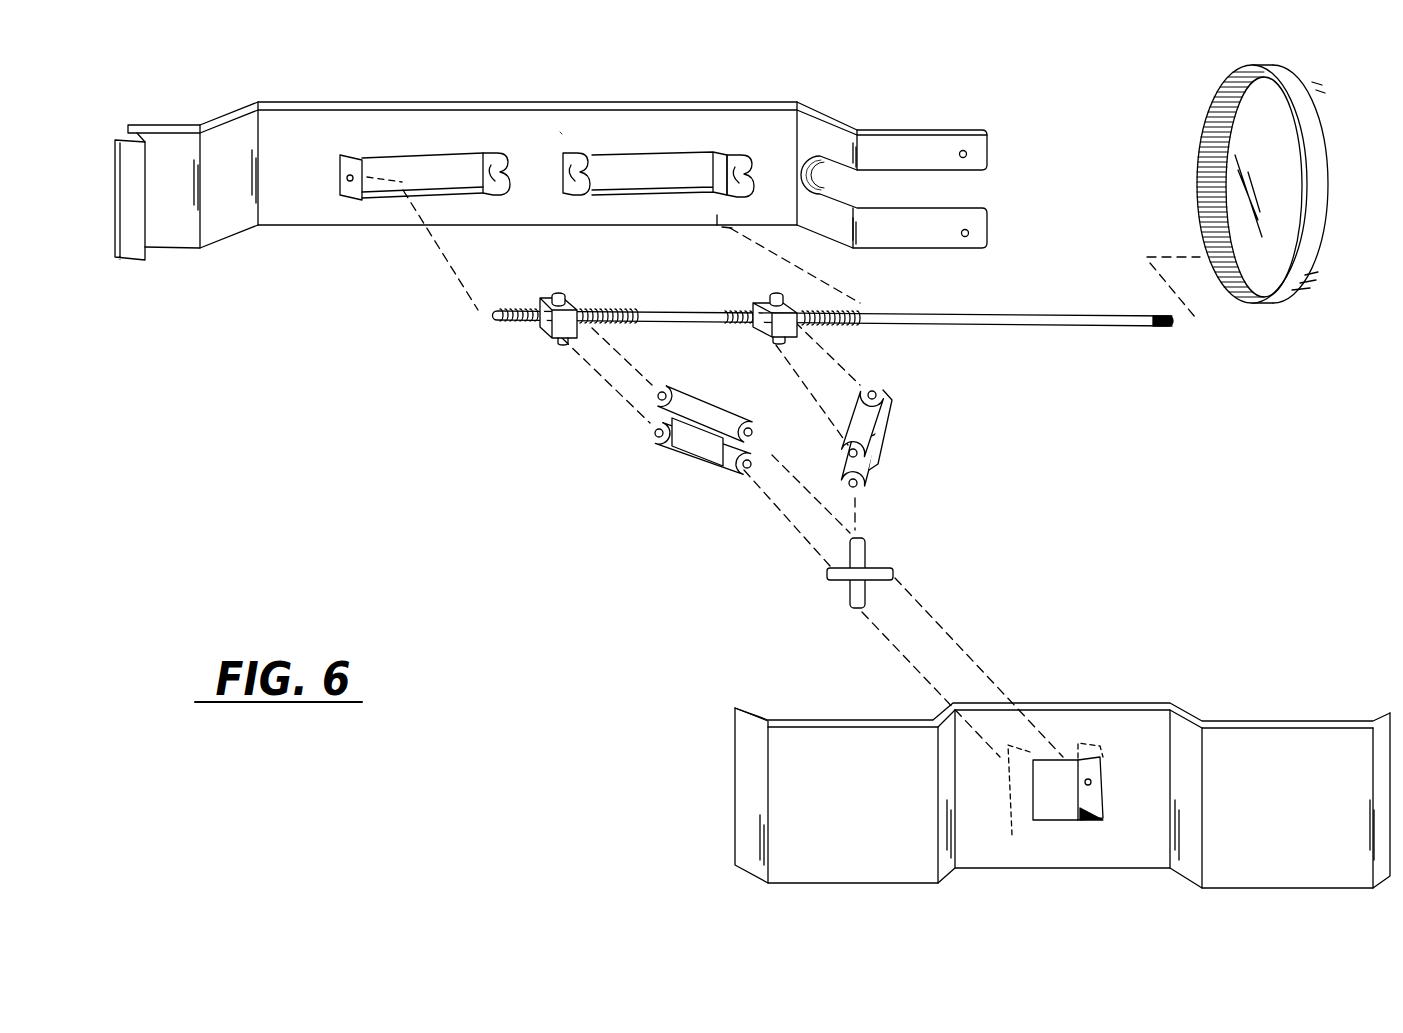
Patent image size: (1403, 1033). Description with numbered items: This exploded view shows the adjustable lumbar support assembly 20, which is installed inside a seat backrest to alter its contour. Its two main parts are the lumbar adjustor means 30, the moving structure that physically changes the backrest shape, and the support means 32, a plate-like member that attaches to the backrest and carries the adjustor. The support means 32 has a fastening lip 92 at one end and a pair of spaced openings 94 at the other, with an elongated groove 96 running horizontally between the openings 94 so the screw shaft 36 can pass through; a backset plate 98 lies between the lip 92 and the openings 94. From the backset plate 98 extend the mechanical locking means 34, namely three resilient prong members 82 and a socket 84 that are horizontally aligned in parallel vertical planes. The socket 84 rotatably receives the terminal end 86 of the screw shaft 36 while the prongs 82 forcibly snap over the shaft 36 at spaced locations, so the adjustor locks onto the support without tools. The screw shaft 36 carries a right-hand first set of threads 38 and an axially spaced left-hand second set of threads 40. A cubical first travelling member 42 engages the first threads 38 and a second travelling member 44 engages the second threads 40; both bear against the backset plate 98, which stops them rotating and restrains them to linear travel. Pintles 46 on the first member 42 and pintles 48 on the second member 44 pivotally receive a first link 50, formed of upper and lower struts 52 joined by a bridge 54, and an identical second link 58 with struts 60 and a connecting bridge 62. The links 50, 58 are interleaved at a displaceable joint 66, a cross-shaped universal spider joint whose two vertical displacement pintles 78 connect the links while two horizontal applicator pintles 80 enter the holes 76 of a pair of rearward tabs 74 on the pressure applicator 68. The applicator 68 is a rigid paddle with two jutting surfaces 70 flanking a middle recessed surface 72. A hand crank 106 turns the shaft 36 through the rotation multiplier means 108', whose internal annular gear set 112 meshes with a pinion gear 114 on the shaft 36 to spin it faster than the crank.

The adjustable lumbar support assembly 20 is at (1153, 495).
The lumbar adjustor means 30 is at (1064, 758).
The support means 32 is at (797, 103).
The mechanical locking means 34 is at (747, 158).
The screw shaft 36 is at (985, 315).
The first set of external thread patterns 38 is at (825, 310).
The second set of external thread patterns 40 is at (607, 305).
The first nut-like travelling member 42 is at (760, 305).
The second nut-like travelling member 44 is at (545, 300).
The pintles 46 is at (776, 295).
The pintles 48 is at (560, 292).
The first link 50 is at (884, 417).
The struts 52 is at (850, 417).
The bridge 54 is at (890, 440).
The second link 58 is at (703, 448).
The struts 60 is at (735, 448).
The connecting bridge 62 is at (697, 445).
The displaceable joint 66 is at (862, 572).
The pressure applicator 68 is at (1178, 708).
The jutting surfaces 70 is at (857, 745).
The middle recessed surface 72 is at (1100, 725).
The tabs 74 is at (1012, 800).
The hole 76 is at (1105, 778).
The displacement pintles 78 is at (862, 538).
The applicator pintles 80 is at (828, 573).
The resilient prong members 82 is at (505, 170).
The socket 84 is at (345, 192).
The terminal end 86 is at (495, 318).
The fastening lip 92 is at (130, 262).
The openings 94 is at (968, 154).
The elongated groove 96 is at (850, 203).
The backset plate 98 is at (560, 132).
The hand crank 106 is at (1253, 184).
The rotation multiplier means 108' is at (1166, 102).
The internal annular gear set 112 is at (1206, 183).
The pinion gear 114 is at (1163, 328).